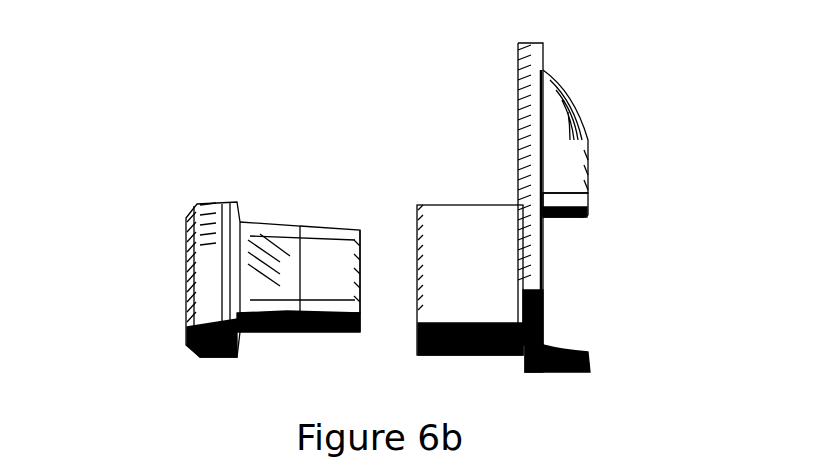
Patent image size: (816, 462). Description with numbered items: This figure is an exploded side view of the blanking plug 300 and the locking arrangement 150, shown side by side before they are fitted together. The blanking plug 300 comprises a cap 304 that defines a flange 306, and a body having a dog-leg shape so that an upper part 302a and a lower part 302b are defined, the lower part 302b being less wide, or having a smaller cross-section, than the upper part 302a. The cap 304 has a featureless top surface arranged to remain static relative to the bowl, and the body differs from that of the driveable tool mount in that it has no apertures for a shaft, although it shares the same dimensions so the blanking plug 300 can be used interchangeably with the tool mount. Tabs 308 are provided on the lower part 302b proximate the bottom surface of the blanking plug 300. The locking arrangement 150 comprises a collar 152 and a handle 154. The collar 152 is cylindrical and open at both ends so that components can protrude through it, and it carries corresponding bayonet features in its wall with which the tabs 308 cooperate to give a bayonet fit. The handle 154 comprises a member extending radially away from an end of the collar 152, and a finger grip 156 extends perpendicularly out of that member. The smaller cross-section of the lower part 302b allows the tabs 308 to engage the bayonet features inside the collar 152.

The locking arrangement 150 is at (634, 50).
The collar 152 is at (487, 201).
The handle 154 is at (518, 83).
The finger grip 156 is at (590, 160).
The blanking plug 300 is at (126, 188).
The upper part of the body 302a is at (253, 227).
The lower part of the body 302b is at (322, 230).
The cap 304 is at (187, 291).
The flange 306 is at (238, 353).
The tabs 308 is at (352, 275).